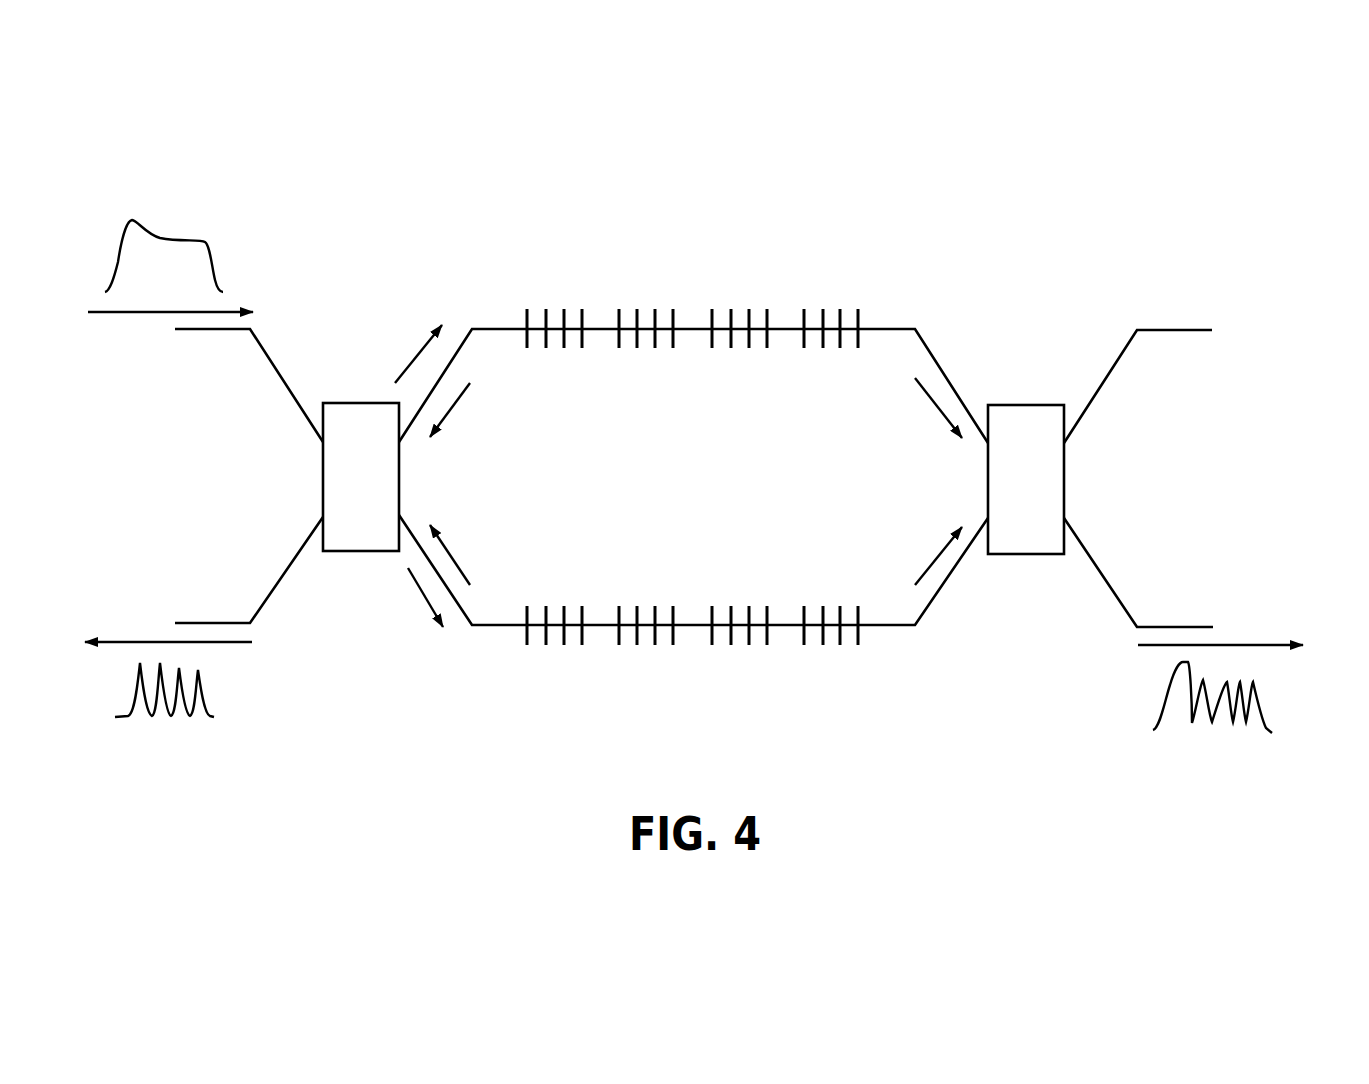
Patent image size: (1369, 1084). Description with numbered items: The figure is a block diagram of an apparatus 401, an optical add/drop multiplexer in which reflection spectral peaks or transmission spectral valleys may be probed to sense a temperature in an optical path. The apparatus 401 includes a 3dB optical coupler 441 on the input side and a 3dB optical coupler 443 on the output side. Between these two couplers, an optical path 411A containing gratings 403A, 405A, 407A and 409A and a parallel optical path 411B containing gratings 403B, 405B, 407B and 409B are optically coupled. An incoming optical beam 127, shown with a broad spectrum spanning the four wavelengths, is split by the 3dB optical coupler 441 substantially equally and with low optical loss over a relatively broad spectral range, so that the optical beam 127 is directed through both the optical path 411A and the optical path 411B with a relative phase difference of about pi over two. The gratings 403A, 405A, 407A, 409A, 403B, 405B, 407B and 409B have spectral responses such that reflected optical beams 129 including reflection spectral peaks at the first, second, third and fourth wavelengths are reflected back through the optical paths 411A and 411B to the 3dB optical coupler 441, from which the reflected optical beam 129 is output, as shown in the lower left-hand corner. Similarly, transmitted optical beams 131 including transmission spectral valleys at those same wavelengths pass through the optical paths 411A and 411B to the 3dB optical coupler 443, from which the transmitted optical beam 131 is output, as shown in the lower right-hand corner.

The apparatus 401 is at (1057, 156).
The optical beam 127 is at (218, 262).
The reflected optical beam 129 is at (220, 715).
The transmitted optical beam 131 is at (1268, 710).
The grating 403A is at (555, 305).
The grating 405A is at (653, 305).
The grating 407A is at (745, 305).
The grating 409A is at (835, 305).
The grating 403B is at (553, 655).
The grating 405B is at (651, 655).
The grating 407B is at (741, 655).
The grating 409B is at (833, 655).
The optical path 411A is at (490, 325).
The optical path 411B is at (495, 635).
The 3dB optical coupler 441 is at (363, 540).
The 3dB optical coupler 443 is at (1032, 543).